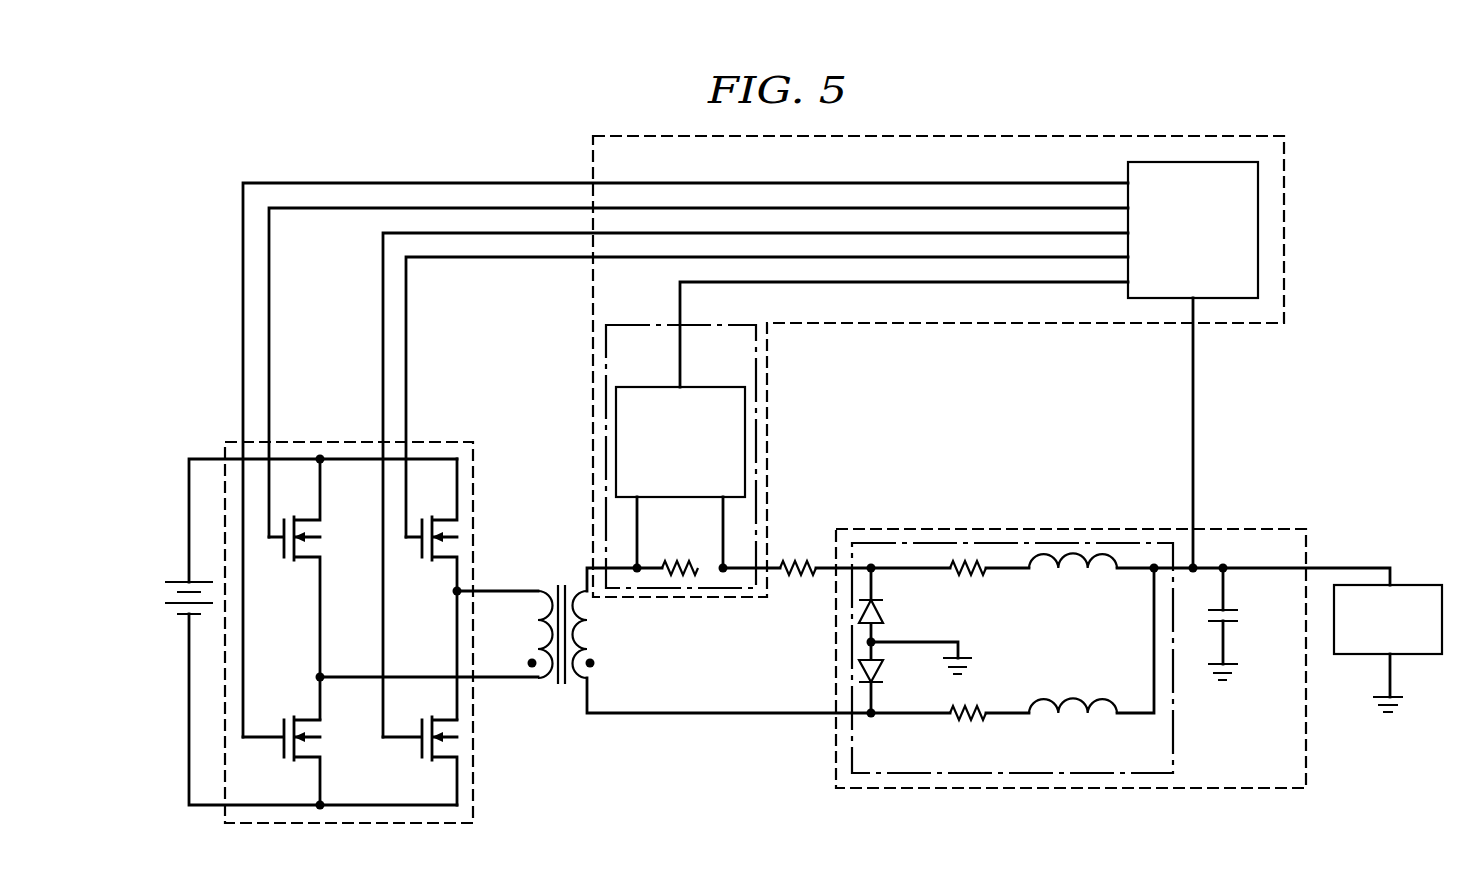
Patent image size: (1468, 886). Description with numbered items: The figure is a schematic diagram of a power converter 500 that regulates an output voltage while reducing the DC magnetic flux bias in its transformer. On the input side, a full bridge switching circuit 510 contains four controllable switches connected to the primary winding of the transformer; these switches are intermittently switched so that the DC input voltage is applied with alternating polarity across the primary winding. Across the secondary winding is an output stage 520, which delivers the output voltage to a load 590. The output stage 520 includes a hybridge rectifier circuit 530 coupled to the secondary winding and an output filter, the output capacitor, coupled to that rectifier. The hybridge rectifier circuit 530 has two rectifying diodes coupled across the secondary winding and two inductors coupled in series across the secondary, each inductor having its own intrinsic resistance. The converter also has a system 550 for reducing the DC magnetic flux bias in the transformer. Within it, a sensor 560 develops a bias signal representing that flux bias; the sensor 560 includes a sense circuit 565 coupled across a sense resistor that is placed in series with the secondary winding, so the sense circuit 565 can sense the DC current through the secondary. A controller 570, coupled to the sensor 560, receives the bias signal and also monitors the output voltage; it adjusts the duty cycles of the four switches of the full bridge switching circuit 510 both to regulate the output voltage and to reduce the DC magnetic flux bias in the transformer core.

The power converter 500 is at (314, 130).
The full bridge switching circuit 510 is at (460, 440).
The output stage 520 is at (860, 528).
The hybridge rectifier circuit 530 is at (1173, 750).
The system for reducing DC magnetic flux bias 550 is at (1284, 215).
The sensor 560 is at (635, 324).
The sense circuit 565 is at (645, 387).
The controller 570 is at (1128, 165).
The load 590 is at (1423, 583).